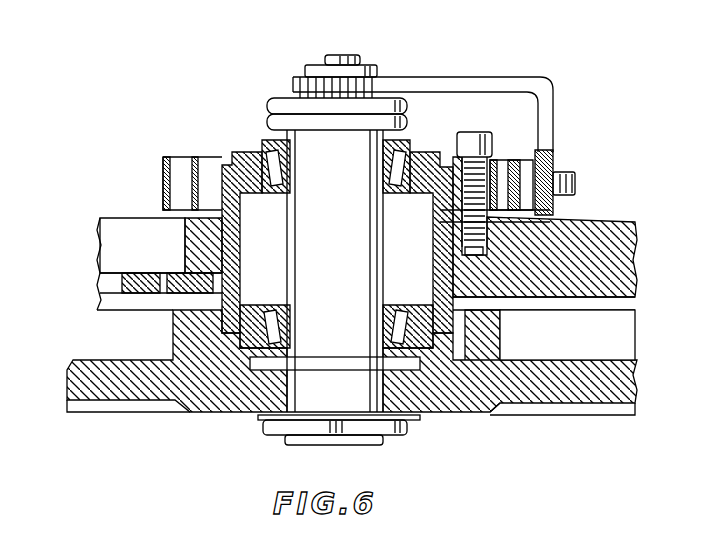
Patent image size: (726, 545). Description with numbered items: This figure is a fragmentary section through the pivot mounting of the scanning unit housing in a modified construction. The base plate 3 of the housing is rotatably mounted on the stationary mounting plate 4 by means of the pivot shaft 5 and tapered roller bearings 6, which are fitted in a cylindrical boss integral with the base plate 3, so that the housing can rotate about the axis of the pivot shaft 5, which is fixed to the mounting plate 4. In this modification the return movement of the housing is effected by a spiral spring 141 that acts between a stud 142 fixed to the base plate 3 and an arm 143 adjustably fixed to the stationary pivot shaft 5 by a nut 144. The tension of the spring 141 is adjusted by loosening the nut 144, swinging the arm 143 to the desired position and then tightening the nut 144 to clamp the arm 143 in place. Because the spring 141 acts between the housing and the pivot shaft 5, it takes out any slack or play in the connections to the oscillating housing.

The base plate 3 is at (583, 223).
The mounting plate 4 is at (220, 412).
The pivot shaft 5 is at (350, 54).
The tapered roller bearings 6 is at (255, 197).
The spiral spring 141 is at (517, 162).
The stud 142 is at (473, 140).
The arm 143 is at (510, 83).
The nut 144 is at (297, 76).